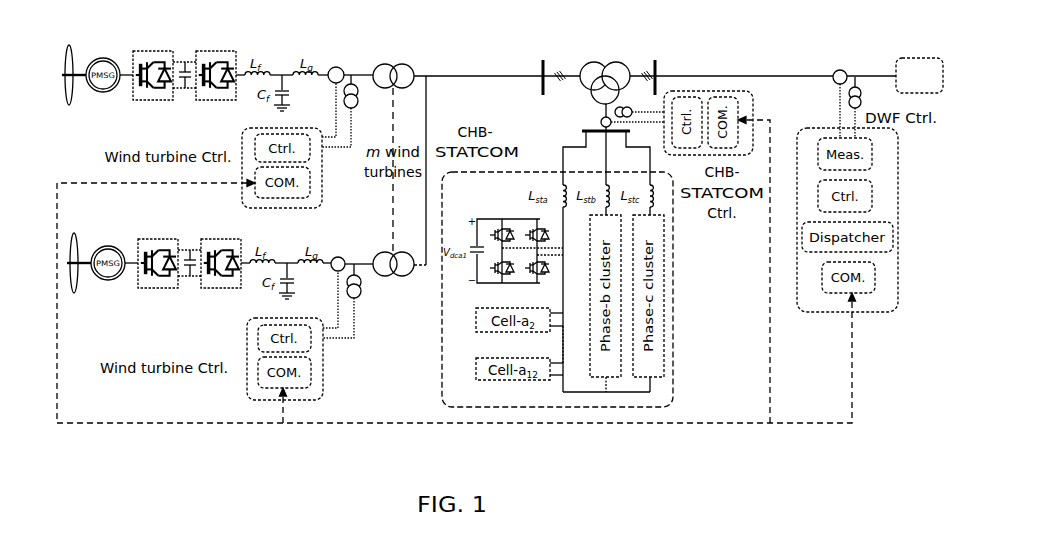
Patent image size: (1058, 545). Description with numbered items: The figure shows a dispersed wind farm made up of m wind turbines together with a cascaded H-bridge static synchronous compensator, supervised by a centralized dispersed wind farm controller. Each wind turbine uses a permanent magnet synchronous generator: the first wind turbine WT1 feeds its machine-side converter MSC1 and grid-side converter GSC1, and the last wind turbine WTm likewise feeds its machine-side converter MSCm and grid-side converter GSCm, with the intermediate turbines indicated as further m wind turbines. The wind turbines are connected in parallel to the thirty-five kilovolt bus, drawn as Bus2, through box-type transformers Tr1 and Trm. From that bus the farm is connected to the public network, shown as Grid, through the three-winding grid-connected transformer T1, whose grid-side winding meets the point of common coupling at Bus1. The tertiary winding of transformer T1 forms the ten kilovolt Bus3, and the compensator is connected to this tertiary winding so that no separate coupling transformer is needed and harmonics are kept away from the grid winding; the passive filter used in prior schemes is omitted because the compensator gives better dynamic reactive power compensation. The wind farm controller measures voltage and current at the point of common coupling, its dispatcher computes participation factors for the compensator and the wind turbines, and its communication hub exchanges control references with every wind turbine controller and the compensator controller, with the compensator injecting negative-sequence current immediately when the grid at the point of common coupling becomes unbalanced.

The wind turbine 1 WT1 is at (195, 85).
The machine side converter 1 MSC1 is at (152, 88).
The grid side converter 1 GSC1 is at (215, 88).
The transformer 1 Tr1 is at (393, 59).
The wind turbine m WTm is at (200, 275).
The machine side converter m MSCm is at (157, 277).
The grid side converter m GSCm is at (220, 277).
The transformer m Trm is at (393, 280).
The 35 kV bus 2 Bus2 is at (542, 59).
The bus 1 / PCC Bus1 is at (655, 59).
The 10 kV bus 3 Bus3 is at (581, 130).
The three-winding transformer T1 is at (605, 73).
The grid Grid is at (919, 75).